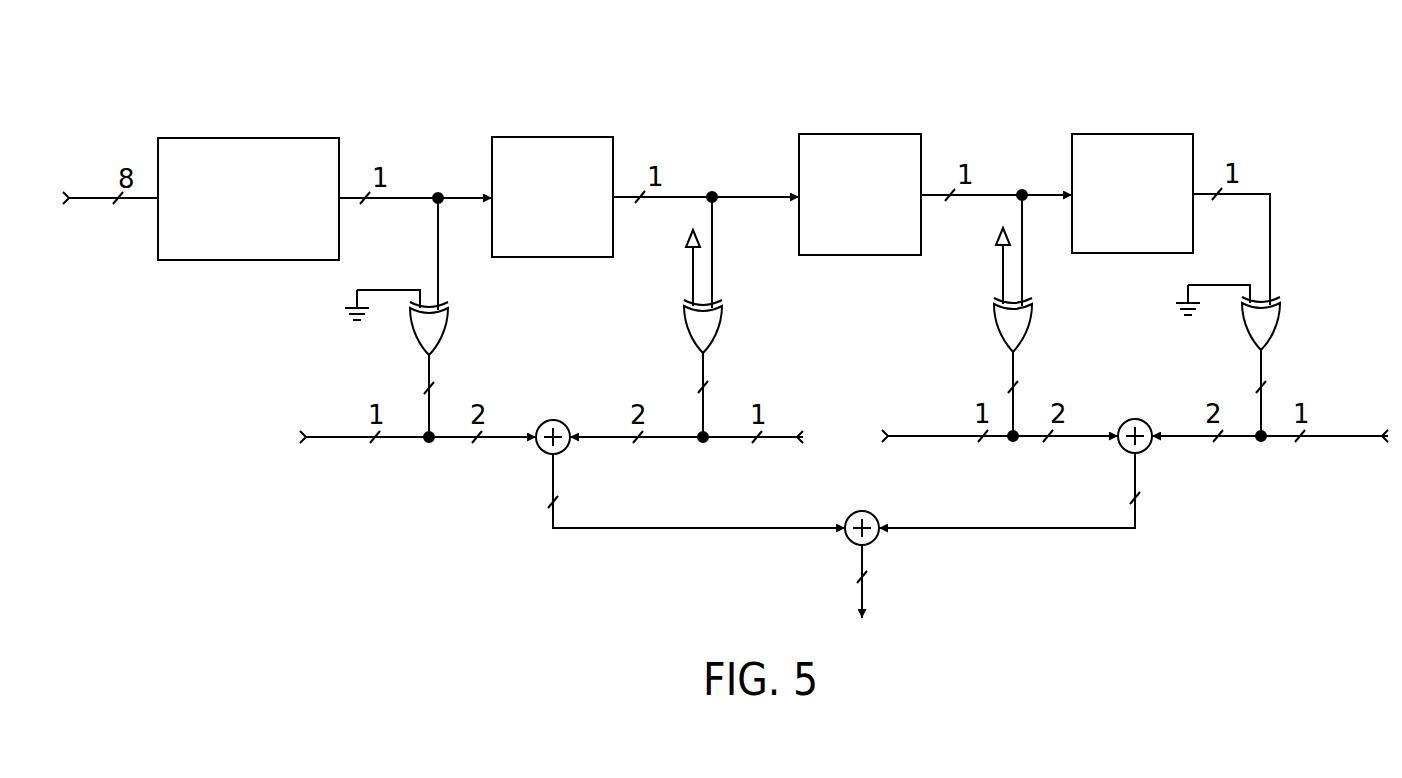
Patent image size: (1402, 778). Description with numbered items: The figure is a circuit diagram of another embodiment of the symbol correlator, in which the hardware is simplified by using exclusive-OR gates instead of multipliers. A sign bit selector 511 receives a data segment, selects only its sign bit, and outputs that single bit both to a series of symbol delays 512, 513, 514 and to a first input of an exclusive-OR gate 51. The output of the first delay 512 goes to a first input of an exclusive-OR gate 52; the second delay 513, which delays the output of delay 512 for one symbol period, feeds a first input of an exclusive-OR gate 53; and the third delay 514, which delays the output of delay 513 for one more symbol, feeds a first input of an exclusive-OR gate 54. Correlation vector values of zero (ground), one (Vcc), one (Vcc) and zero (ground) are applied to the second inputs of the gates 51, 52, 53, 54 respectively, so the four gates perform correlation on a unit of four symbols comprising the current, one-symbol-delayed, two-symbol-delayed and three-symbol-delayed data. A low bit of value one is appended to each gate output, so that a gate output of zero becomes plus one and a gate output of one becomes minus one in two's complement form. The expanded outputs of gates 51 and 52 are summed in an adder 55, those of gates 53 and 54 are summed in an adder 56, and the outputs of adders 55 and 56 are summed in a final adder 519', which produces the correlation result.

The sign bit selector 511 is at (278, 138).
The symbol delay 512 is at (573, 137).
The symbol delay 513 is at (876, 134).
The symbol delay 514 is at (1138, 134).
The exclusive-OR gate 51 is at (448, 330).
The exclusive-OR gate 52 is at (722, 320).
The exclusive-OR gate 53 is at (1032, 322).
The exclusive-OR gate 54 is at (1280, 318).
The adder 55 is at (555, 420).
The adder 56 is at (1135, 419).
The final adder 519' is at (855, 535).